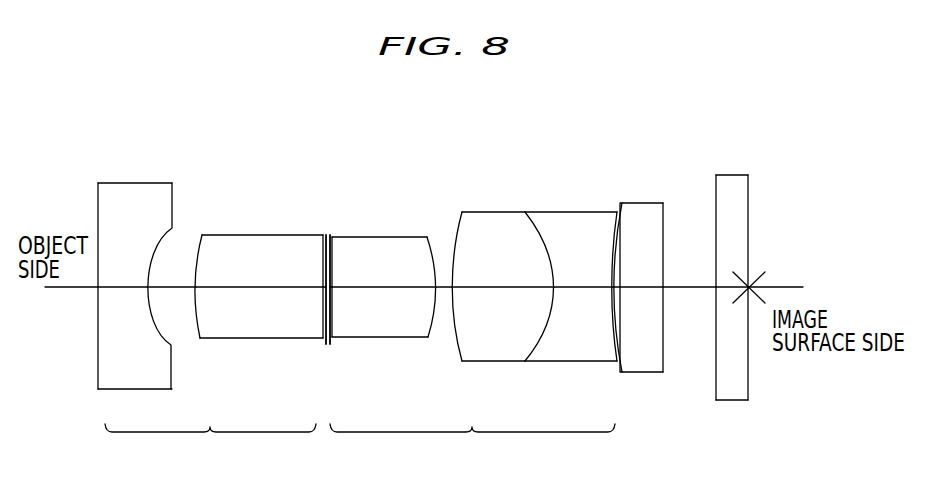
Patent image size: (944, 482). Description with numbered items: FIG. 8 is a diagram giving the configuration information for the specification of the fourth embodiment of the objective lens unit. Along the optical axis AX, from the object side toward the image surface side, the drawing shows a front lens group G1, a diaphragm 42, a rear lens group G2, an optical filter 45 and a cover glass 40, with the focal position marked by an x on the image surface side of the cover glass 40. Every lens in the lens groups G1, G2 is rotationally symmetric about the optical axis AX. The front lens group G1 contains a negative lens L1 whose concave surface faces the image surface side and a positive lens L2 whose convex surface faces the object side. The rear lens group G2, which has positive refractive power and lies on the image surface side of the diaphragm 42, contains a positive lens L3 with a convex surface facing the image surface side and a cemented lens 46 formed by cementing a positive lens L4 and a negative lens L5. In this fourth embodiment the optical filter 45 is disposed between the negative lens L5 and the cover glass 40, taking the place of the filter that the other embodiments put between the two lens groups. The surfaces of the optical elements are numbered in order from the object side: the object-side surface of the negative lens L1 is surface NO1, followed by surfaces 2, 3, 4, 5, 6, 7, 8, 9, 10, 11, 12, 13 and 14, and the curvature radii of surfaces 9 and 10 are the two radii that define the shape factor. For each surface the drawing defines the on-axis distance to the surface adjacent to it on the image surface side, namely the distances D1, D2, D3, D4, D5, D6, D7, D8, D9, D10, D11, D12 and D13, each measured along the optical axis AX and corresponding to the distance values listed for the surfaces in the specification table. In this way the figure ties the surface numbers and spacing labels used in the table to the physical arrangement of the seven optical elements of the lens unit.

The negative lens L1 is at (135, 183).
The positive lens L2 is at (255, 235).
The positive lens L3 is at (413, 237).
The positive lens L4 is at (497, 212).
The negative lens L5 is at (568, 212).
The front lens group G1 is at (210, 447).
The rear lens group G2 is at (472, 447).
The cover glass 40 is at (728, 175).
The diaphragm 42 is at (328, 235).
The optical filter 45 is at (650, 203).
The cemented lens 46 is at (590, 150).
The optical axis AX is at (800, 287).
The surface number one NO1 is at (98, 380).
The surface number two 2 is at (171, 350).
The surface number three 3 is at (197, 340).
The surface number four 4 is at (327, 350).
The surface number five 5 is at (328, 350).
The surface number six 6 is at (330, 350).
The surface number seven 7 is at (430, 337).
The surface number eight 8 is at (462, 350).
The surface number nine 9 is at (545, 343).
The surface number ten 10 is at (612, 340).
The surface number eleven 11 is at (614, 342).
The surface number twelve 12 is at (663, 320).
The surface number thirteen 13 is at (716, 320).
The surface number fourteen 14 is at (748, 320).
The distance D1 is at (122, 287).
The distance D2 is at (172, 287).
The distance D3 is at (255, 287).
The distance D4 is at (324, 270).
The distance D5 is at (332, 270).
The distance D6 is at (373, 287).
The distance D7 is at (442, 285).
The distance D8 is at (502, 287).
The distance D9 is at (585, 287).
The distance D10 is at (616, 250).
The distance D11 is at (632, 287).
The distance D12 is at (685, 287).
The distance D13 is at (728, 287).